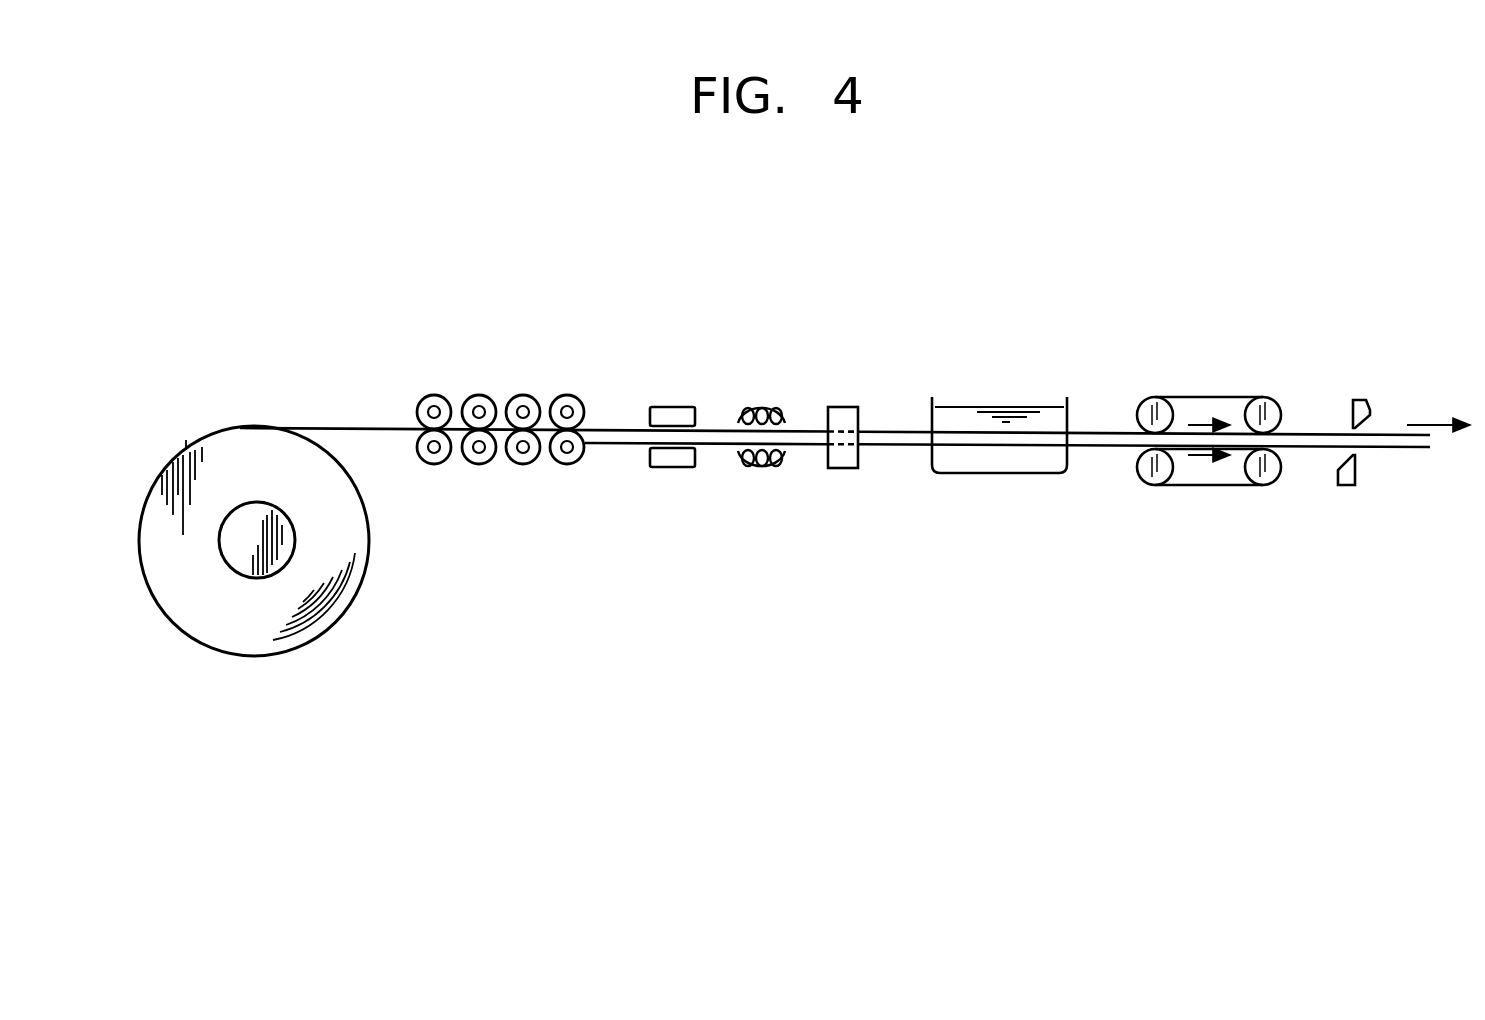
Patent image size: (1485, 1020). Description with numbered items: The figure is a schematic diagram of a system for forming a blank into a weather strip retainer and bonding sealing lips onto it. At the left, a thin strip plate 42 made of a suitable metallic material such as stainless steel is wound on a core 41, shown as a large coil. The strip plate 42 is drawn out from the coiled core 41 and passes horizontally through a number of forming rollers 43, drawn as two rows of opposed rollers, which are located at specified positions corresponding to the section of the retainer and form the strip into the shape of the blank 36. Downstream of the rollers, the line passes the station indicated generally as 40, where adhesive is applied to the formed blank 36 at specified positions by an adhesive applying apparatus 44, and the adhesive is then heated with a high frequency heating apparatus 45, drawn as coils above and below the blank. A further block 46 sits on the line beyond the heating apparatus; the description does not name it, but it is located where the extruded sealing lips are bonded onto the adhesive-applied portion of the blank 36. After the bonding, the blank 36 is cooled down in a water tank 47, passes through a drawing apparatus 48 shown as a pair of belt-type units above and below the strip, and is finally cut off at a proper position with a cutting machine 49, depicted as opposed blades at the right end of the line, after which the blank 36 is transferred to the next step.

The blank 36 is at (613, 445).
The processing apparatus 40 is at (648, 306).
The core 41 is at (242, 555).
The strip plate 42 is at (330, 428).
The forming rollers 43 is at (508, 390).
The adhesive applying apparatus 44 is at (677, 407).
The high frequency heating apparatus 45 is at (765, 403).
The processing block 46 is at (850, 408).
The water tank 47 is at (1067, 418).
The drawing apparatus 48 is at (1217, 390).
The cutting machine 49 is at (1362, 390).